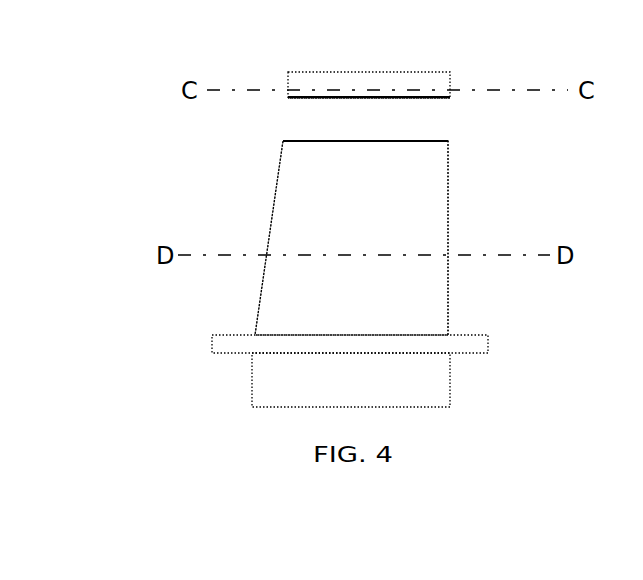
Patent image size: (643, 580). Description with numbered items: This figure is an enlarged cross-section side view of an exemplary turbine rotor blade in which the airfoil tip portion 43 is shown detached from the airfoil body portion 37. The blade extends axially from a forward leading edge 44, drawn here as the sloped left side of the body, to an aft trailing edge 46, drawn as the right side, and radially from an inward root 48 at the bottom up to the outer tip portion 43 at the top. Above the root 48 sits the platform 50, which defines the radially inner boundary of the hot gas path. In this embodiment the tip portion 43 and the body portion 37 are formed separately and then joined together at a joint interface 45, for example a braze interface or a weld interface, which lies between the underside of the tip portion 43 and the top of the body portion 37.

The airfoil body portion 37 is at (351, 238).
The airfoil tip portion 43 is at (383, 72).
The axially forward leading edge 44 is at (270, 220).
The joint interface 45 is at (303, 100).
The axially aft trailing edge 46 is at (448, 237).
The radially inward root 48 is at (408, 385).
The platform 50 is at (252, 343).